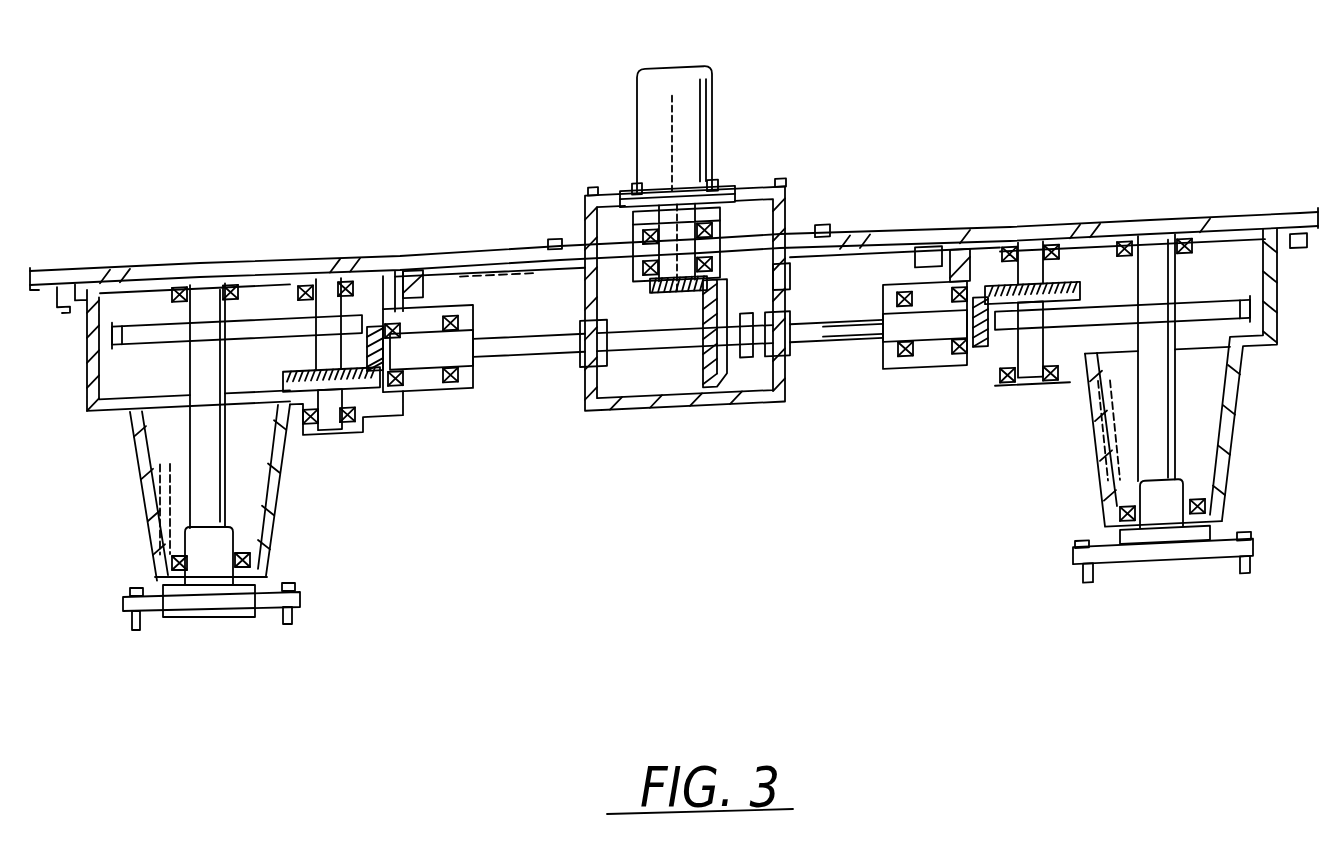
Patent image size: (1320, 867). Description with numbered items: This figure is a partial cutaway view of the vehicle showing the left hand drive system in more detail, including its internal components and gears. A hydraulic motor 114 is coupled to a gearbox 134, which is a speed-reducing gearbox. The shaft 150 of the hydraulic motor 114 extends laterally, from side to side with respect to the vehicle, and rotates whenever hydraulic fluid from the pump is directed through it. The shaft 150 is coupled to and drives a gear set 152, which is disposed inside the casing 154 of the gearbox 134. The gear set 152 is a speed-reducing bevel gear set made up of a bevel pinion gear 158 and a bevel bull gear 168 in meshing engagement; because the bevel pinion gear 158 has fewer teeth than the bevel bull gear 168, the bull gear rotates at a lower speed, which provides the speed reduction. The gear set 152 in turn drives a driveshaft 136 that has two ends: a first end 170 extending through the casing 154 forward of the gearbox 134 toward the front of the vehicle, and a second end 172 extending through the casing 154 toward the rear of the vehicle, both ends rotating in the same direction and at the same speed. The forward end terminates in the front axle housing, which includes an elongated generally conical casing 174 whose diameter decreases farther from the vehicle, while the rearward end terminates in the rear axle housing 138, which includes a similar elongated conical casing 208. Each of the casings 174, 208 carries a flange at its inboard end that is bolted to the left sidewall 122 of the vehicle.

The hydraulic motor 114 is at (659, 66).
The left sidewall 122 is at (487, 252).
The gearbox 134 is at (787, 220).
The driveshaft 136 is at (498, 356).
The rear axle housing 138 is at (1004, 395).
The shaft 150 is at (634, 187).
The gear set 152 is at (680, 307).
The casing 154 is at (783, 283).
The bevel pinion gear 158 is at (650, 288).
The bevel bull gear 168 is at (716, 293).
The first end 170 is at (481, 391).
The second end 172 is at (882, 370).
The conical casing 174 is at (100, 409).
The conical casing 208 is at (1249, 349).